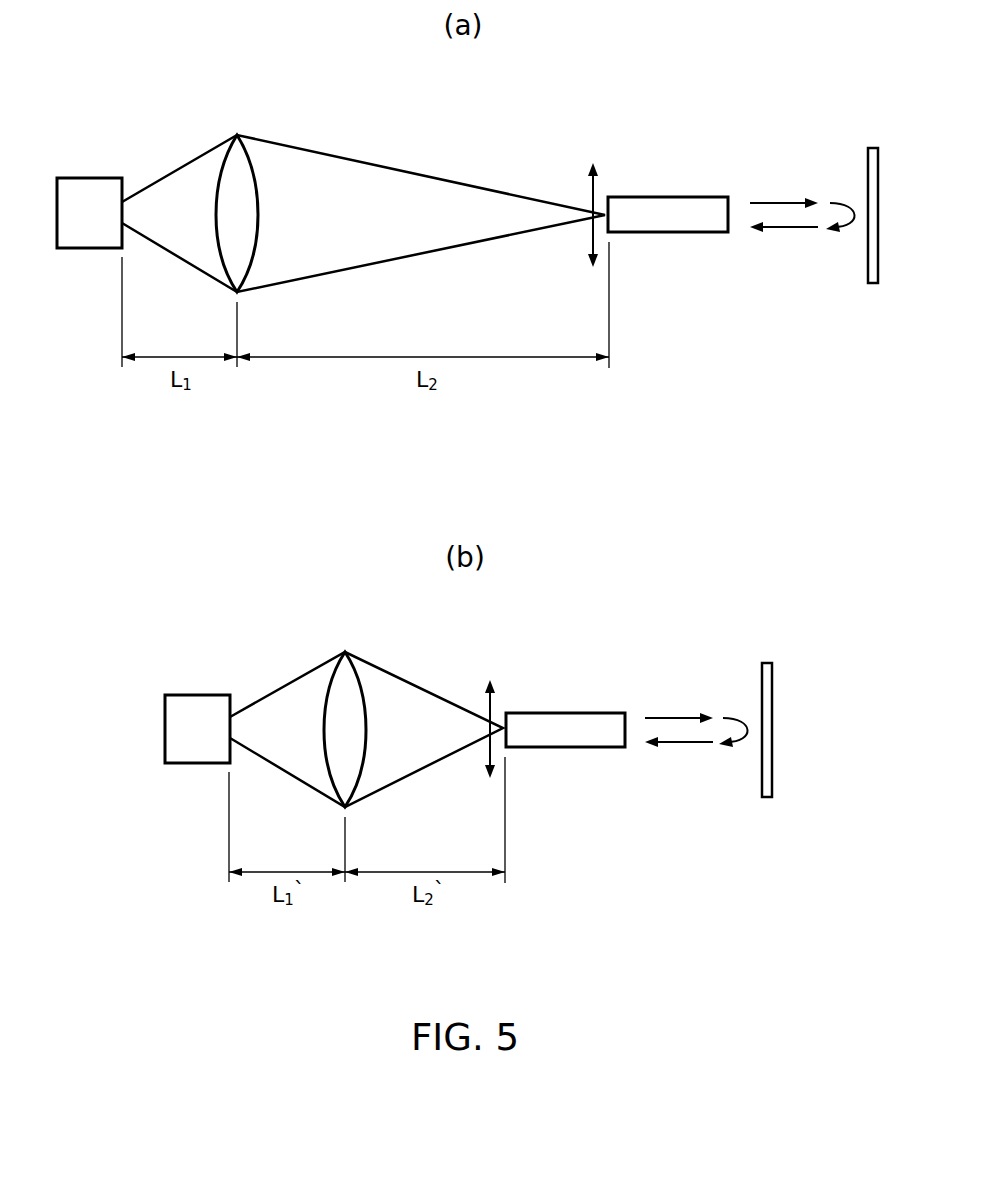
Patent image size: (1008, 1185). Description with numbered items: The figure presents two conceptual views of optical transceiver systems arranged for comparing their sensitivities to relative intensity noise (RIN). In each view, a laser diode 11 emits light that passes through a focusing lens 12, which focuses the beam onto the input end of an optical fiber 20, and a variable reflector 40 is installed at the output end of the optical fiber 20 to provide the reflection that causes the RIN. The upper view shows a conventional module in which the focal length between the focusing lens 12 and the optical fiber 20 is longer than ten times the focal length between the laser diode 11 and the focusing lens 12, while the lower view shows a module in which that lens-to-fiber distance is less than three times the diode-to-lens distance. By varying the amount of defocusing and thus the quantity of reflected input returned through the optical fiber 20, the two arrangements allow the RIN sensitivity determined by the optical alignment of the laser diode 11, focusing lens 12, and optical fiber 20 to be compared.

The laser diode 11 is at (81, 190).
The focusing lens 12 is at (235, 147).
The optical fiber 20 is at (695, 196).
The variable reflector 40 is at (871, 147).